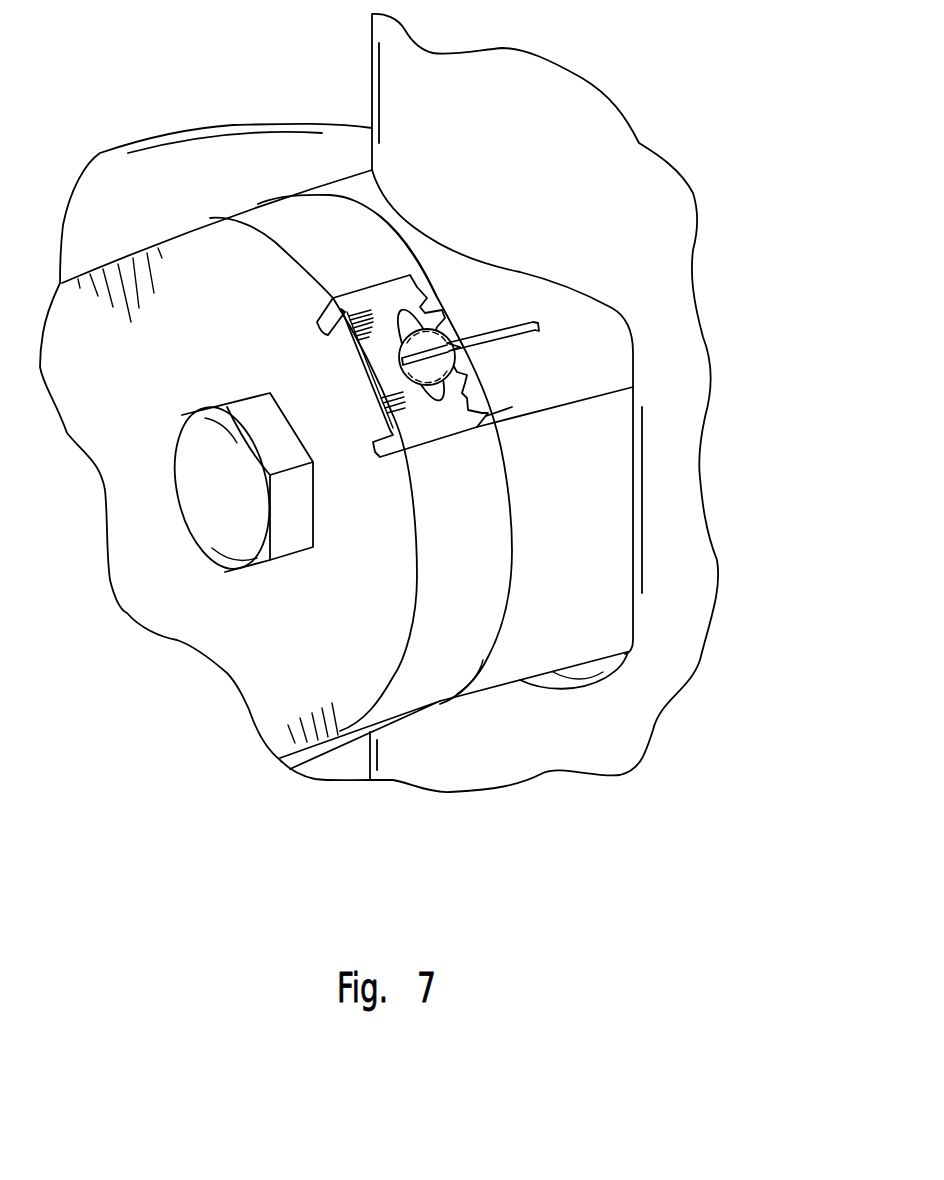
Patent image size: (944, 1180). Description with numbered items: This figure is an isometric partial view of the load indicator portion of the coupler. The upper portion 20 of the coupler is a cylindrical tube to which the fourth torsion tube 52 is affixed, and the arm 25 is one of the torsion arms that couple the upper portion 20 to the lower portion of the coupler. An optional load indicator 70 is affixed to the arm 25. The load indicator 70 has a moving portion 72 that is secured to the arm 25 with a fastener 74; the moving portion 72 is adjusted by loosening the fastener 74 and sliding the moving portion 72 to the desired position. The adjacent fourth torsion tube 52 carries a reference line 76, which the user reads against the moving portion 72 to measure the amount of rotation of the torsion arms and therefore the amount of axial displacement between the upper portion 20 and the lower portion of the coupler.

The upper portion 20 is at (555, 110).
The arm 25 is at (142, 562).
The fourth torsion tube 52 is at (590, 602).
The load indicator 70 is at (422, 253).
The moving portion 72 is at (382, 293).
The fastener 74 is at (440, 337).
The reference line 76 is at (533, 323).